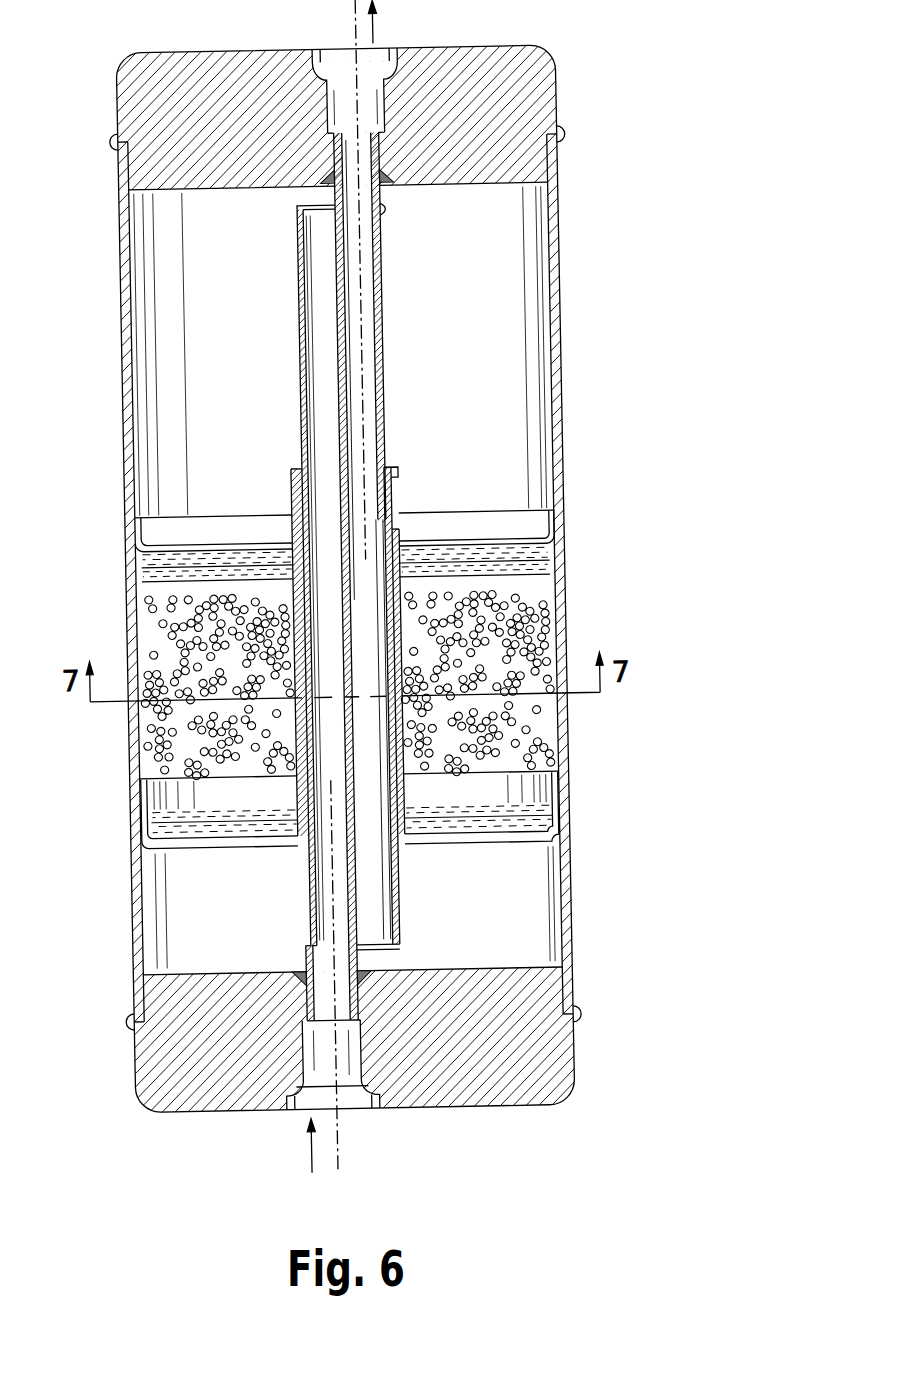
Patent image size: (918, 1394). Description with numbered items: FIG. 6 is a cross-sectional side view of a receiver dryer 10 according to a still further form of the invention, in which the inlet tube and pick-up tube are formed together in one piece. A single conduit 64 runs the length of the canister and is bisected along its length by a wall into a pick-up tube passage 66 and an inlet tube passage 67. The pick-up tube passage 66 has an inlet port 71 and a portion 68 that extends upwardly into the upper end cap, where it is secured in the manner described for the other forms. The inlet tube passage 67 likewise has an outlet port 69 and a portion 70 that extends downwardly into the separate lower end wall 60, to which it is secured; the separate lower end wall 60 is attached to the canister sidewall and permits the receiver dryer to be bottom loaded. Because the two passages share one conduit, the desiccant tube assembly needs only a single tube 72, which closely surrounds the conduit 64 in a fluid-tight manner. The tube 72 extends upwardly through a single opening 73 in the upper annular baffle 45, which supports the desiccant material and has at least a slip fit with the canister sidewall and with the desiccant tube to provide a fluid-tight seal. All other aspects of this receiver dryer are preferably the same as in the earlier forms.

The receiver dryer 10 is at (714, 72).
The lower end wall 60 is at (489, 1086).
The conduit 64 is at (358, 428).
The pick-up tube passage 66 is at (368, 868).
The inlet tube passage 67 is at (315, 859).
The portion of pick-up tube passage 68 is at (379, 205).
The outlet port 69 is at (323, 206).
The portion of inlet tube passage 70 is at (313, 957).
The inlet port 71 is at (370, 956).
The tube 72 is at (397, 496).
The upper annular baffle 45 is at (501, 541).
The opening 73 is at (395, 578).